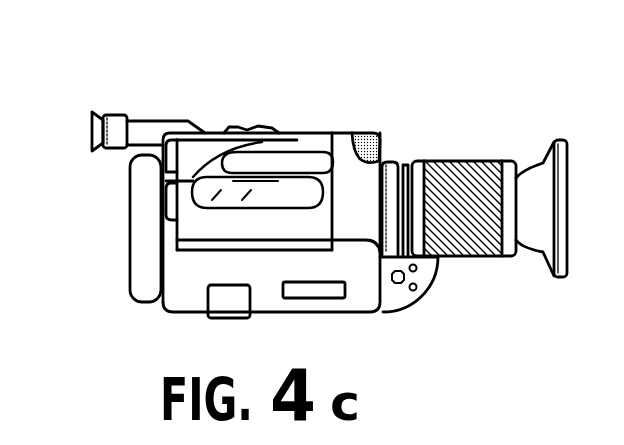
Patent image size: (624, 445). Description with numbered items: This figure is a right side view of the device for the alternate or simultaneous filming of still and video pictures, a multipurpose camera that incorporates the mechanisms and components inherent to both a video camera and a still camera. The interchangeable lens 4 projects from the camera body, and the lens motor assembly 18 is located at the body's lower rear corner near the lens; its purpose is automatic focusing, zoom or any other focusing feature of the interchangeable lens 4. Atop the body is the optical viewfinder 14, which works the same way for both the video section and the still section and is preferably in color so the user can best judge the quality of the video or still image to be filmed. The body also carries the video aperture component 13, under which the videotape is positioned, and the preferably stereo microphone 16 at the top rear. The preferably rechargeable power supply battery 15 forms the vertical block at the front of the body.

The interchangeable lens 4 is at (478, 163).
The video aperture component 13 is at (253, 230).
The optical viewfinder 14 is at (112, 127).
The power supply battery 15 is at (140, 290).
The stereo microphone 16 is at (378, 133).
The lens motor assembly 18 is at (400, 297).